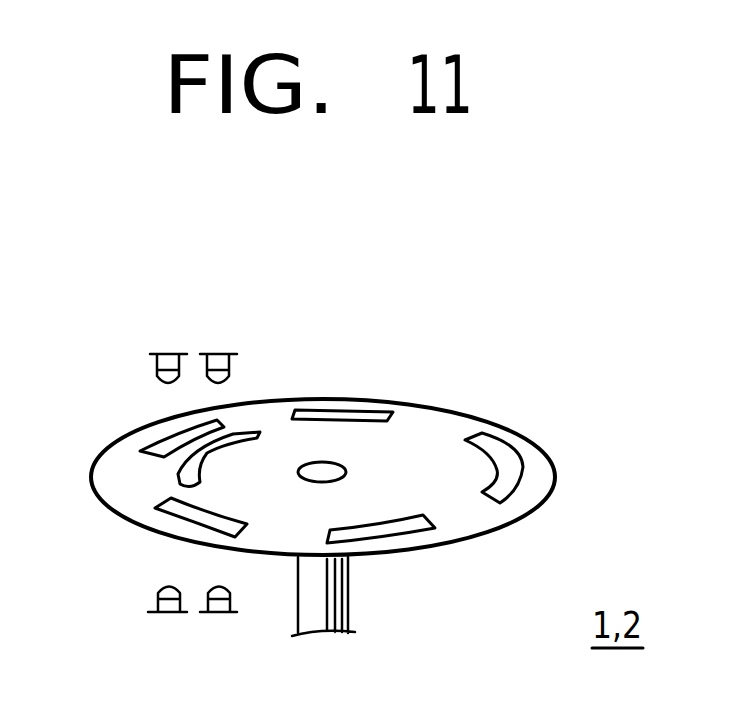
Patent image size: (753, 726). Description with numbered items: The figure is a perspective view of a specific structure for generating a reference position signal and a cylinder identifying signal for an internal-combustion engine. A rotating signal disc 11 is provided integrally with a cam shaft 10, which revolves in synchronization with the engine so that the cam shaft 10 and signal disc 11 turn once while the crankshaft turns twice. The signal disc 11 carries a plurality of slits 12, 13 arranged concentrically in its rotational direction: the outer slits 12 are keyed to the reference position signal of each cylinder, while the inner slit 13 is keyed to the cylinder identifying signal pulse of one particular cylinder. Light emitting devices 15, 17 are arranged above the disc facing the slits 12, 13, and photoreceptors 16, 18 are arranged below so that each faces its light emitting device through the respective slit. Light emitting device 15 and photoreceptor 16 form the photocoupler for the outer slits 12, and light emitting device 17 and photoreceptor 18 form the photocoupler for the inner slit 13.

The cam shaft 10 is at (340, 610).
The signal disc 11 is at (433, 430).
The outer slits 12 is at (517, 487).
The inner slit 13 is at (258, 432).
The light emitting device 15 is at (168, 353).
The photoreceptor 16 is at (155, 612).
The light emitting device 17 is at (218, 353).
The photoreceptor 18 is at (219, 616).